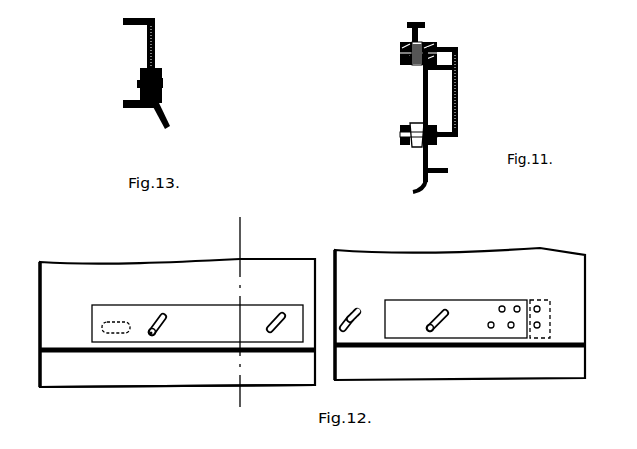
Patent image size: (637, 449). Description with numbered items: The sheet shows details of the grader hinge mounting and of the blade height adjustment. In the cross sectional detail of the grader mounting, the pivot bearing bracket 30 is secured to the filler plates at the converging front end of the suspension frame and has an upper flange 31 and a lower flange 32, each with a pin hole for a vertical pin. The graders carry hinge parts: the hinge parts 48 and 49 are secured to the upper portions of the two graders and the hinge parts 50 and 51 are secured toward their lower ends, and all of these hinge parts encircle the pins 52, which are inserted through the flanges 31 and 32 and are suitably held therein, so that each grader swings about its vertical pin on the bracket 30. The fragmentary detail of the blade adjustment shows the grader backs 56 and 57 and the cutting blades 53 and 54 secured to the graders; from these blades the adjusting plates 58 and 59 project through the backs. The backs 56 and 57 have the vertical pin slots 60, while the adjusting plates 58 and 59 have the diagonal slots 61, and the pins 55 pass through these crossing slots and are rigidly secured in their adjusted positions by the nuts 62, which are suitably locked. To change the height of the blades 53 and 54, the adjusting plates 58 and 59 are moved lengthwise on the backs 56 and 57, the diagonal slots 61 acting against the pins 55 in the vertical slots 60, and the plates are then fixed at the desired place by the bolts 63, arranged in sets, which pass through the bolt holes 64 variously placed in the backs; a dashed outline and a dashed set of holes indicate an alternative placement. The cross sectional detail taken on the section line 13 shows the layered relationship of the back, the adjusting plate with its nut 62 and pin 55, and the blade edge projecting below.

In FIG. 12, the section line 13— 13 is at (241, 310).
In FIG. 11, the pivot bearing bracket 30 is at (459, 50).
In FIG. 11, the upper flange 31 is at (400, 52).
In FIG. 11, the lower flange 32 is at (398, 138).
In FIG. 11, the hinge part 48 is at (428, 45).
In FIG. 11, the hinge part 49 is at (400, 63).
In FIG. 11, the hinge part 50 is at (400, 127).
In FIG. 11, the hinge part 51 is at (402, 145).
In FIG. 11, the pin 52 is at (418, 64).
In FIG. 13, the cutting blade 53 is at (185, 116).
In FIG. 11, the cutting blade 53 is at (405, 191).
In FIG. 12, the cutting blade 53 is at (177, 381).
In FIG. 13, the cutting blade 54 is at (165, 121).
In FIG. 11, the cutting blade 54 is at (420, 186).
In FIG. 12, the cutting blade 54 is at (78, 377).
In FIG. 13, the pin 55 is at (158, 82).
In FIG. 13, the grader back 56 is at (161, 63).
In FIG. 11, the grader back 56 is at (473, 117).
In FIG. 12, the grader back 56 is at (185, 312).
In FIG. 13, the grader back 57 is at (155, 40).
In FIG. 11, the grader back 57 is at (428, 112).
In FIG. 12, the grader back 57 is at (265, 268).
In FIG. 13, the adjusting plate 58 is at (124, 85).
In FIG. 12, the adjusting plate 58 is at (141, 289).
In FIG. 13, the adjusting plate 59 is at (143, 76).
In FIG. 12, the adjusting plate 59 is at (102, 305).
In FIG. 12, the vertical pin slot 60 is at (153, 323).
In FIG. 12, the diagonal slot 61 is at (160, 315).
In FIG. 13, the nut 62 is at (138, 88).
In FIG. 12, the bolt 63 is at (503, 308).
In FIG. 12, the bolt hole 64 is at (539, 307).